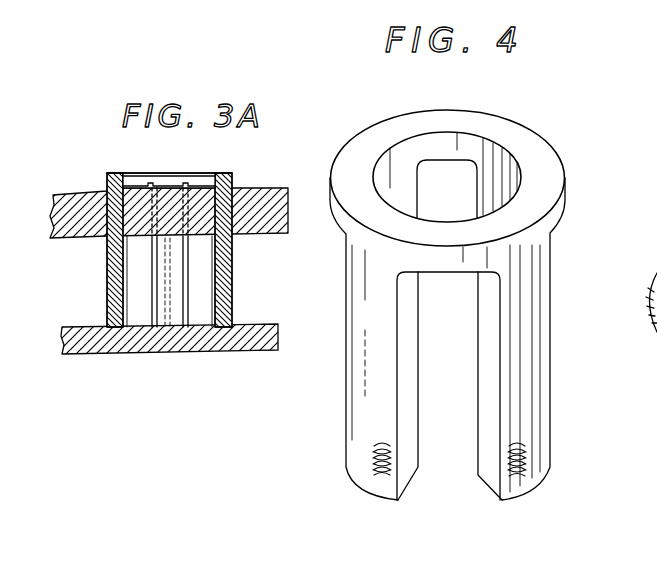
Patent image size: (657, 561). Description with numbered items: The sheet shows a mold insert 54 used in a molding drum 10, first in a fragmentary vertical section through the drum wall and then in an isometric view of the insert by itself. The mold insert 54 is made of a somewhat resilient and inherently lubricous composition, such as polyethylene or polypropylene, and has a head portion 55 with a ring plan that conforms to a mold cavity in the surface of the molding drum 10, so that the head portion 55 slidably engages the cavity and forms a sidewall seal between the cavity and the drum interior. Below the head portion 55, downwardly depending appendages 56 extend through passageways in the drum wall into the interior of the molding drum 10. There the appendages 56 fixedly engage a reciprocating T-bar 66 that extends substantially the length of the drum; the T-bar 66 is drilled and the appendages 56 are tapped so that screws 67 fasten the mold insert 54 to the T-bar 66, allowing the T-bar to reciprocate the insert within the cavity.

In FIG. 3A, the molding drum 10 is at (78, 189).
In FIG. 3A, the mold insert 54 is at (239, 290).
In FIG. 4, the mold insert 54 is at (557, 292).
In FIG. 3A, the head portion 55 is at (216, 174).
In FIG. 4, the head portion 55 is at (537, 135).
In FIG. 3A, the appendages 56 is at (165, 267).
In FIG. 4, the appendages 56 is at (347, 373).
In FIG. 3A, the T-bar 66 is at (159, 343).
In FIG. 4, the screws 67 is at (527, 462).